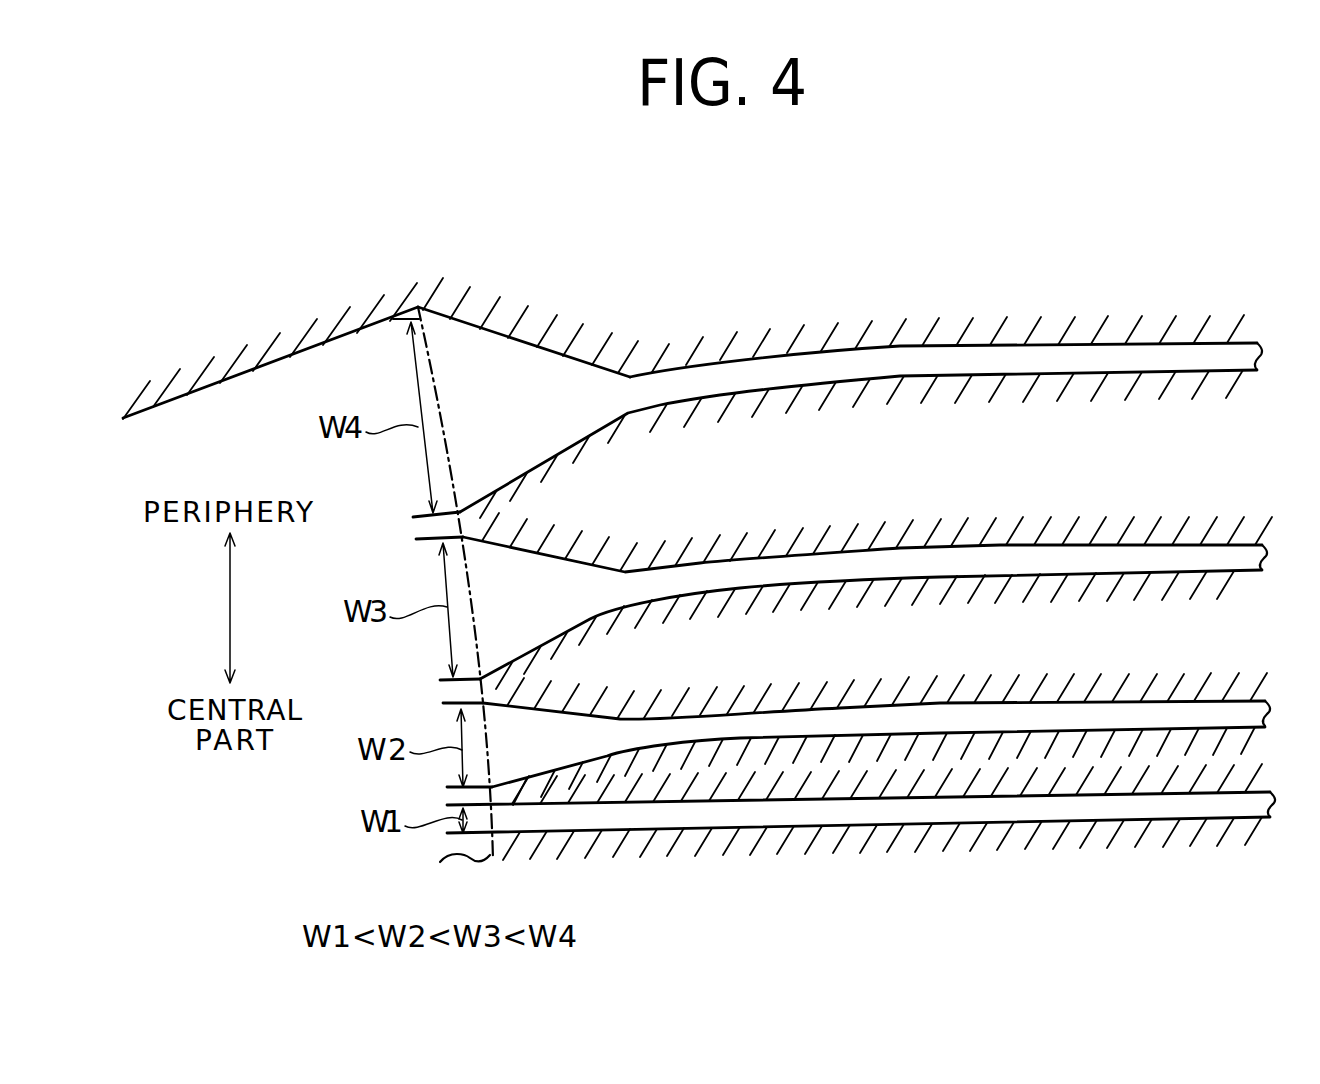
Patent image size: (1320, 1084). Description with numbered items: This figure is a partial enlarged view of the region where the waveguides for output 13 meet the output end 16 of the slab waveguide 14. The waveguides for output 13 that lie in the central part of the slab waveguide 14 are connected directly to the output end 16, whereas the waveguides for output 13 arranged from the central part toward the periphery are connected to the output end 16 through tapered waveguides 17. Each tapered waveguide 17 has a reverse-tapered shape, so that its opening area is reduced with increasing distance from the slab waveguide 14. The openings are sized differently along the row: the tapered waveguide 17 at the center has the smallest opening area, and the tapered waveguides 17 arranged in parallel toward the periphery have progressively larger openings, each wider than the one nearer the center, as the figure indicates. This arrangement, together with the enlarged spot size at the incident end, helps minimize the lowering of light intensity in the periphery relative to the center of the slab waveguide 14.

The waveguide for output 13 is at (967, 345).
The slab waveguide 14 is at (218, 385).
The output end 16 is at (430, 367).
The tapered waveguide 17 is at (560, 352).